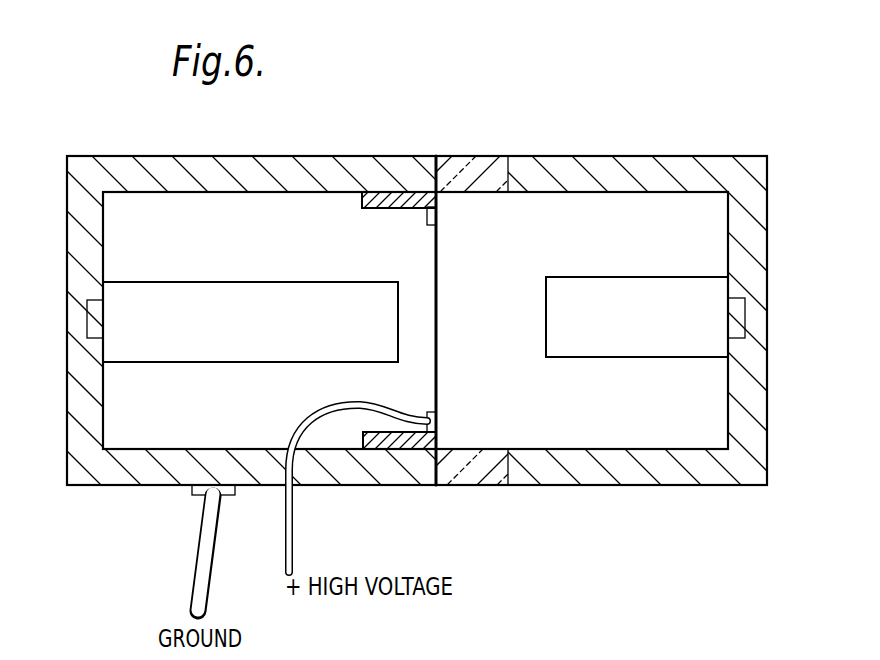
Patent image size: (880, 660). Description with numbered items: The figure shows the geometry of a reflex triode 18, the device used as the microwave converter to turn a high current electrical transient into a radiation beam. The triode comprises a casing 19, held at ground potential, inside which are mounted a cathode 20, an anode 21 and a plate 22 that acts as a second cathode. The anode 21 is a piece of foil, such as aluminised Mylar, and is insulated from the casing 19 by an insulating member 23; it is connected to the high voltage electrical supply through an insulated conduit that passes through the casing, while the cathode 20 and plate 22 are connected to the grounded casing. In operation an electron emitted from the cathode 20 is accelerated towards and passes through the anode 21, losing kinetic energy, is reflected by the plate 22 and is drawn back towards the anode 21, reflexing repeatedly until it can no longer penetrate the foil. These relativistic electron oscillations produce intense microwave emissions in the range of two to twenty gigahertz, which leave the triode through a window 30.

The reflex triode 18 is at (100, 150).
The casing 19 is at (599, 162).
The cathode 20 is at (275, 293).
The anode 21 is at (439, 376).
The plate 22 is at (628, 283).
The insulating member 23 is at (407, 191).
The window 30 is at (471, 165).